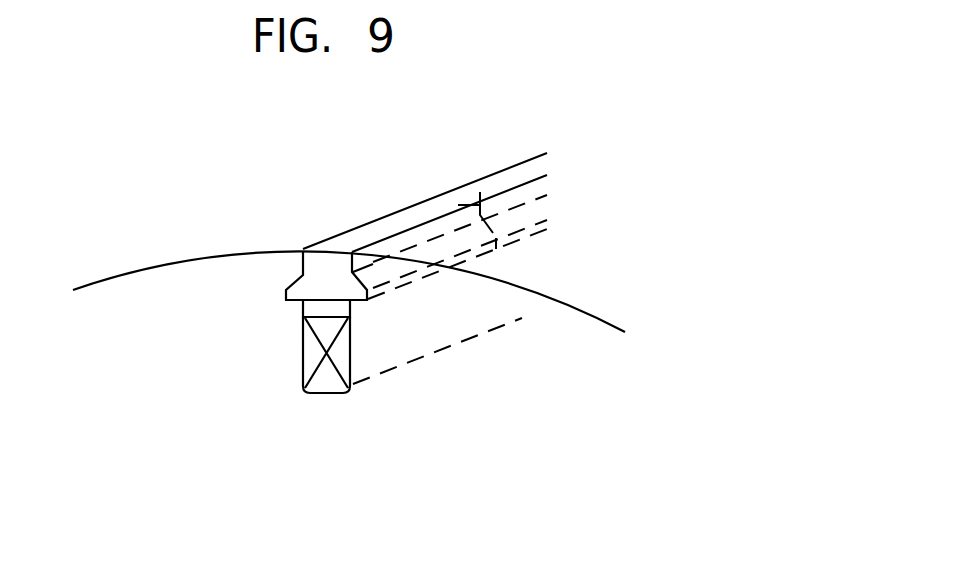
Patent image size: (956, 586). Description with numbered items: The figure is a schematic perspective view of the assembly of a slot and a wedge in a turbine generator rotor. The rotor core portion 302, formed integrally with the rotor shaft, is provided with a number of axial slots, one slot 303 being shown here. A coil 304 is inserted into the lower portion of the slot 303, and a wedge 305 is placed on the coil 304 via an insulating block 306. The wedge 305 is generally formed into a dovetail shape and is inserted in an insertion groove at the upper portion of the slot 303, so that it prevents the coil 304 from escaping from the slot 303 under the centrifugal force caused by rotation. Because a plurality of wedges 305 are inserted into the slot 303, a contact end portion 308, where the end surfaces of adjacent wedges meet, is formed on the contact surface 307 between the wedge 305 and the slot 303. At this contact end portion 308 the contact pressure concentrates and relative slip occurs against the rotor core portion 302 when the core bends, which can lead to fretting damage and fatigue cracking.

The rotor core portion 302 is at (527, 388).
The slot 303 is at (353, 349).
The coil 304 is at (313, 355).
The wedge 305 is at (480, 192).
The insulating block 306 is at (313, 308).
The contact surface 307 is at (367, 295).
The contact end portion 308 is at (493, 216).